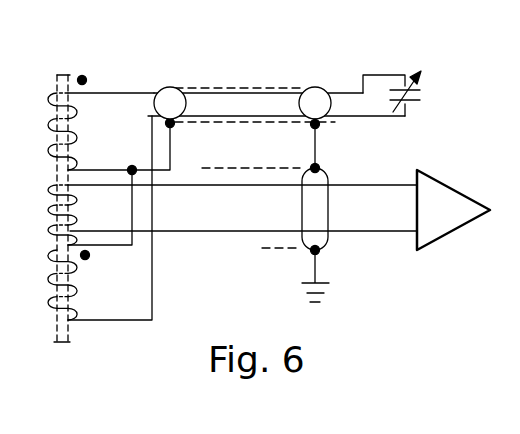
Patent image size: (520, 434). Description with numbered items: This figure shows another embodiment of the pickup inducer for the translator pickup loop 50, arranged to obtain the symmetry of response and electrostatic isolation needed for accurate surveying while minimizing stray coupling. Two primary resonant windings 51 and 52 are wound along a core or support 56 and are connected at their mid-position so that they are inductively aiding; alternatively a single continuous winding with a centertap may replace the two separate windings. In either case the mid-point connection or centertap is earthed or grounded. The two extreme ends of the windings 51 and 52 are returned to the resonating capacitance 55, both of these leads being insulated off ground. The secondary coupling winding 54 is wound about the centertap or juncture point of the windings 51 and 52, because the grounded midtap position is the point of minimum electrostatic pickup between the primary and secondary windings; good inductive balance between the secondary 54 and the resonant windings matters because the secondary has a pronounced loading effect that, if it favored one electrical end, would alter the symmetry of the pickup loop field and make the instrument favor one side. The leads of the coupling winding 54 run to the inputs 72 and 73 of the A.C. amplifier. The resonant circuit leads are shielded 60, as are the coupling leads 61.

The translator pickup loop 50 is at (372, 338).
The primary resonant winding 51 is at (78, 119).
The primary resonant winding 52 is at (80, 292).
The secondary coupling winding 54 is at (80, 205).
The resonating capacitance 55 is at (430, 95).
The core or support 56 is at (63, 73).
The shield for resonant circuit leads 60 is at (172, 84).
The shield for coupling leads 61 is at (296, 264).
The A.C. amplifier input 72 is at (365, 180).
The A.C. amplifier input 73 is at (370, 238).